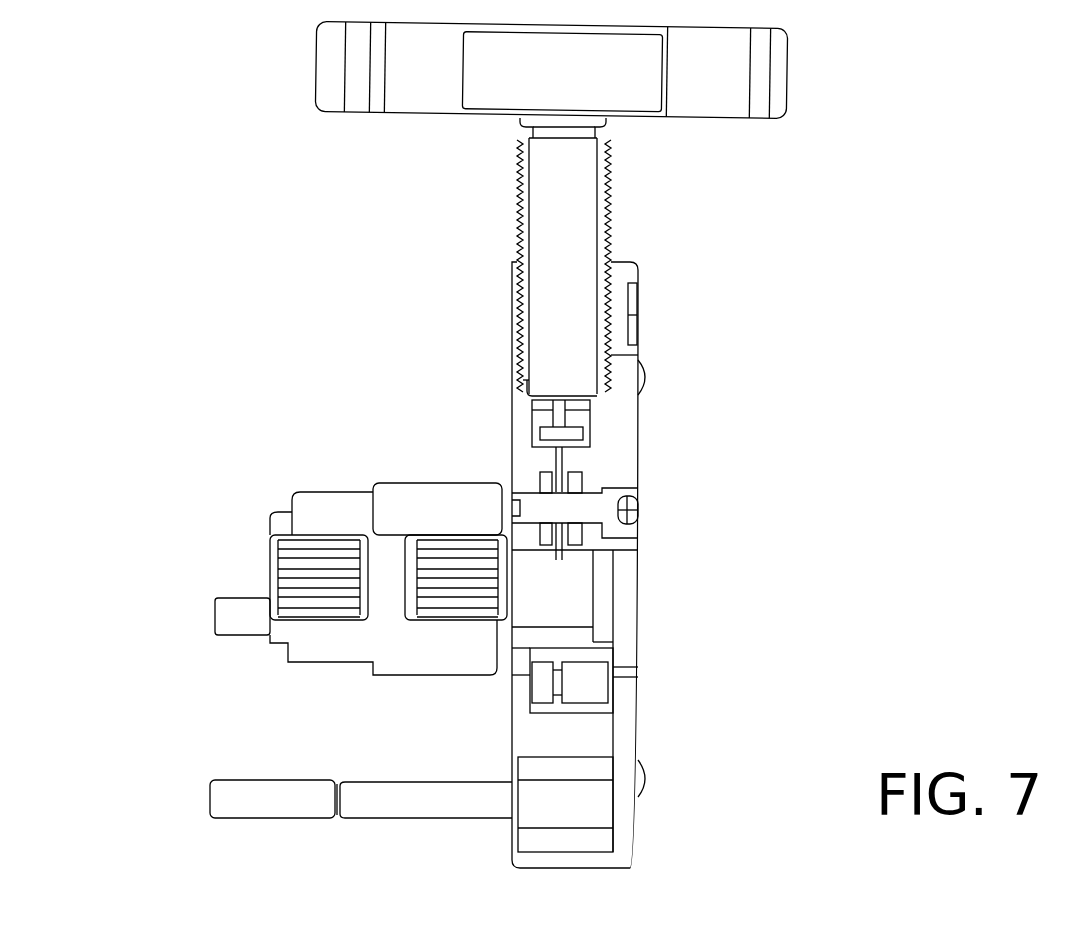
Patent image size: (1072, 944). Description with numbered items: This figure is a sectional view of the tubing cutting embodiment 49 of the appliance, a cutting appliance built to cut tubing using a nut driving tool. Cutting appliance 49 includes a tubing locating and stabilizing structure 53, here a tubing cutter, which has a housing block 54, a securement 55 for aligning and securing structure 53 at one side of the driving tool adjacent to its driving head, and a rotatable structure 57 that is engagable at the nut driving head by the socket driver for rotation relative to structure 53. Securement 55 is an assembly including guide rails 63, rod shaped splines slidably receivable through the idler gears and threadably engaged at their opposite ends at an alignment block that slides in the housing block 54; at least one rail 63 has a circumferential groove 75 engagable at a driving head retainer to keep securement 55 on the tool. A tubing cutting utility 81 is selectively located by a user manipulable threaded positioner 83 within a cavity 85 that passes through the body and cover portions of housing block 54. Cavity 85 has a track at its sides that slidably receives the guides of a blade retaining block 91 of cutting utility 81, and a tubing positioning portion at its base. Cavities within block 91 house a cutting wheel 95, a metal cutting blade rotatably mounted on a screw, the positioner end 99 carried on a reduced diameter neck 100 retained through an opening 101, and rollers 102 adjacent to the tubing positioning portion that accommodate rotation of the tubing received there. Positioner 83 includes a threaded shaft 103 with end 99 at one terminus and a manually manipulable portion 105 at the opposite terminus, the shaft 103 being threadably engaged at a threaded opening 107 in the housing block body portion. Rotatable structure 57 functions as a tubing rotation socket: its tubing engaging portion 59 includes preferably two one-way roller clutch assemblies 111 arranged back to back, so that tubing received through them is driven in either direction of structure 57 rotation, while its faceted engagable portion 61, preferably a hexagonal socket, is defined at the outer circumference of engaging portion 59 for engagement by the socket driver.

The tubing cutting embodiment 49 is at (738, 328).
The tubing locating and stabilizing structure 53 is at (636, 262).
The housing block 54 is at (640, 452).
The securement 55 is at (470, 800).
The rotatable structure 57 is at (405, 500).
The tubing engaging portion 59 is at (290, 524).
The faceted engagable portion 61 is at (300, 492).
The guide rails 63 is at (215, 617).
The circumferential groove 75 is at (342, 782).
The tubing cutting utility 81 is at (626, 470).
The threaded positioner 83 is at (612, 185).
The cavity 85 is at (573, 605).
The blade retaining block 91 is at (618, 428).
The cutting wheel 95 is at (570, 553).
The positioner end 99 is at (532, 433).
The reduced diameter neck 100 is at (565, 396).
The opening 101 is at (533, 380).
The rollers 102 is at (540, 690).
The threaded shaft 103 is at (530, 223).
The manually manipulable portion 105 is at (788, 75).
The threaded opening 107 is at (596, 304).
The one-way roller clutch assembly 111 is at (270, 565).